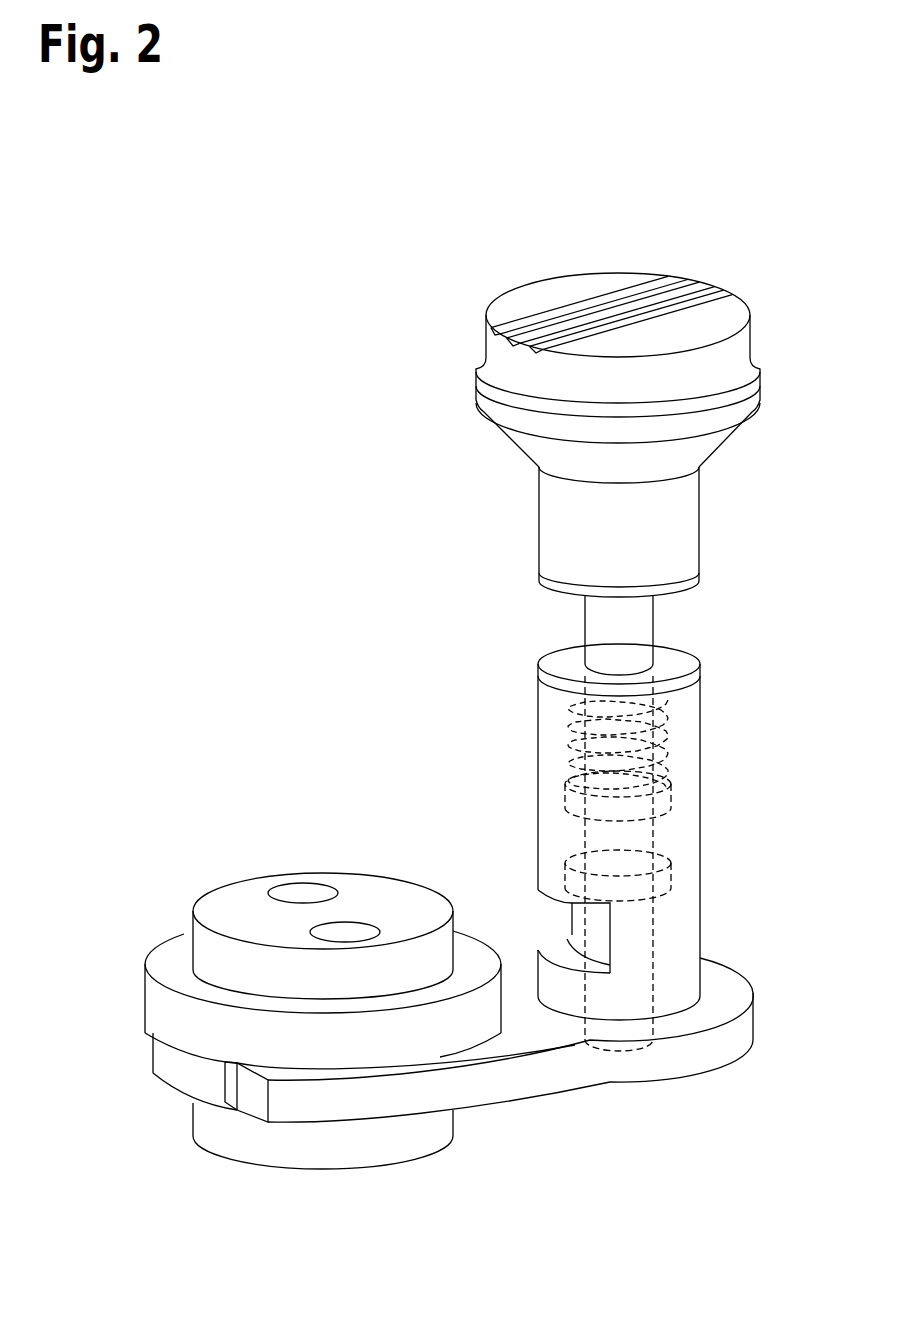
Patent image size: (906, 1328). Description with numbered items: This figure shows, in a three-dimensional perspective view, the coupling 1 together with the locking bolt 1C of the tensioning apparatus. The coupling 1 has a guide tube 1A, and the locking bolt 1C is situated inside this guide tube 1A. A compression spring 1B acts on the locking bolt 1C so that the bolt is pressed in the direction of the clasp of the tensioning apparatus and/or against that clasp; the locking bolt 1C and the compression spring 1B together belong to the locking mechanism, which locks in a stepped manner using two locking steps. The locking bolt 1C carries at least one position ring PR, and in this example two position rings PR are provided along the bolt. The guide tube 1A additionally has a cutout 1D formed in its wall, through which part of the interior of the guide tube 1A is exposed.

The coupling 1 is at (239, 549).
The guide tube 1A is at (675, 940).
The compression spring 1B is at (665, 727).
The locking bolt 1C is at (638, 631).
The cutout 1D is at (558, 942).
The position ring PR is at (663, 798).